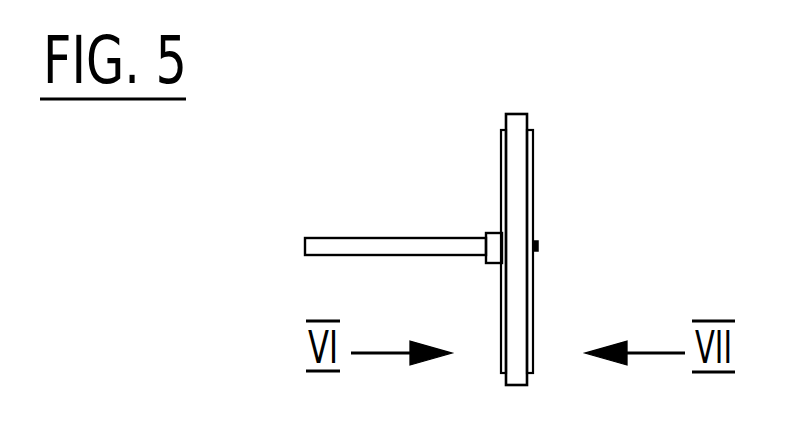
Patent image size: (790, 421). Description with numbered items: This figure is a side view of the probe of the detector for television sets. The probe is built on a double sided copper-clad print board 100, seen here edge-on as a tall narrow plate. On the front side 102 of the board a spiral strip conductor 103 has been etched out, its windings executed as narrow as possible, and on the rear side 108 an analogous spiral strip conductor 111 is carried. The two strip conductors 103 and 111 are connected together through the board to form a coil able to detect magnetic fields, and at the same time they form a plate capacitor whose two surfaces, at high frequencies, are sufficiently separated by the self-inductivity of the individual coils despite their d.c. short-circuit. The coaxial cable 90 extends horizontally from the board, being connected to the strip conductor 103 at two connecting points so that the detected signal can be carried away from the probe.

The coaxial cable 90 is at (331, 243).
The double sided copper-clad print board 100 is at (517, 120).
The front side 102 is at (478, 190).
The spiral strip conductor 103 is at (498, 134).
The rear side 108 is at (558, 191).
The spiral strip conductor 111 is at (538, 136).